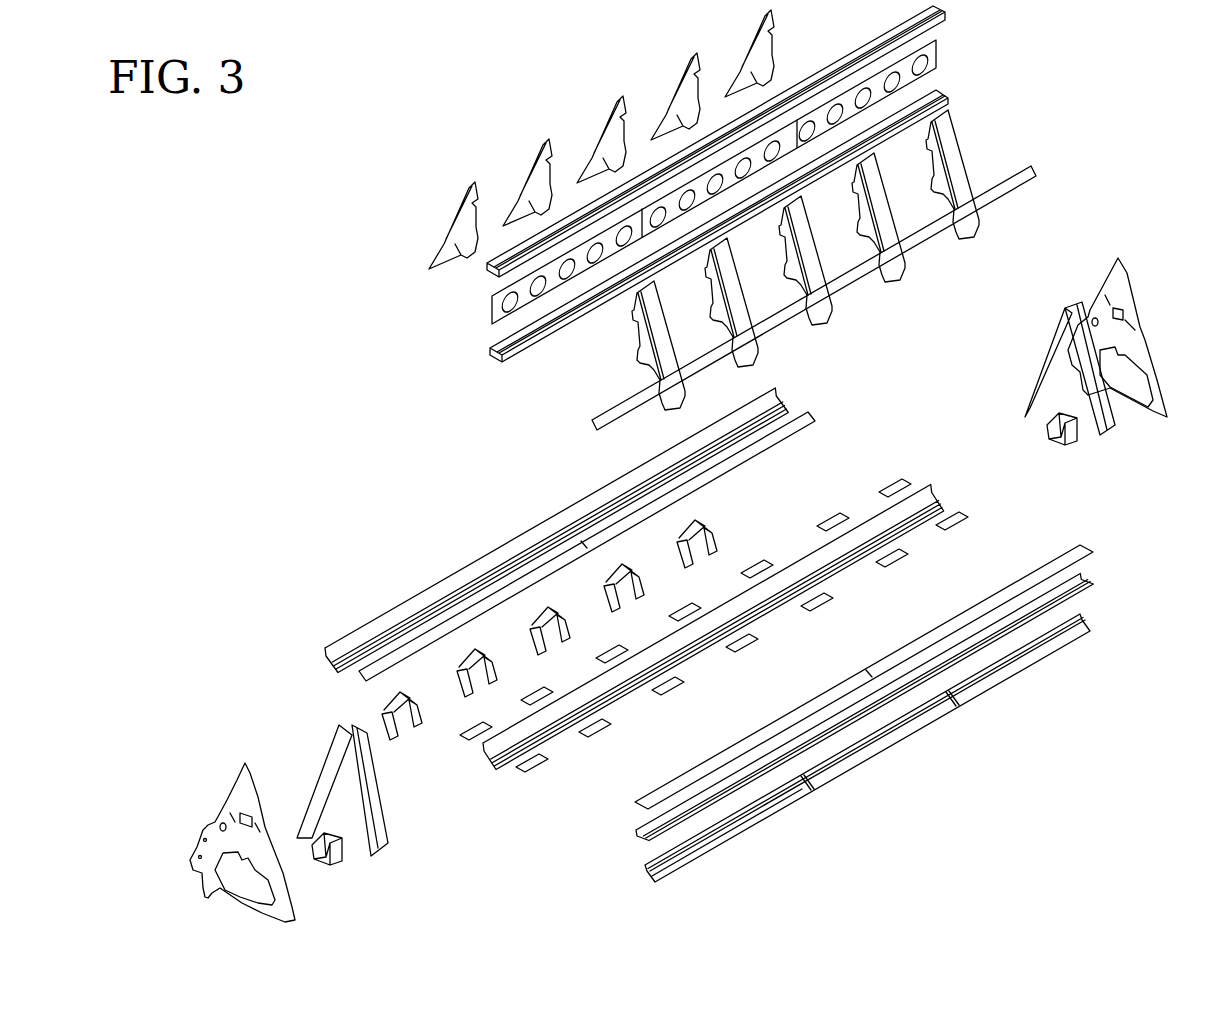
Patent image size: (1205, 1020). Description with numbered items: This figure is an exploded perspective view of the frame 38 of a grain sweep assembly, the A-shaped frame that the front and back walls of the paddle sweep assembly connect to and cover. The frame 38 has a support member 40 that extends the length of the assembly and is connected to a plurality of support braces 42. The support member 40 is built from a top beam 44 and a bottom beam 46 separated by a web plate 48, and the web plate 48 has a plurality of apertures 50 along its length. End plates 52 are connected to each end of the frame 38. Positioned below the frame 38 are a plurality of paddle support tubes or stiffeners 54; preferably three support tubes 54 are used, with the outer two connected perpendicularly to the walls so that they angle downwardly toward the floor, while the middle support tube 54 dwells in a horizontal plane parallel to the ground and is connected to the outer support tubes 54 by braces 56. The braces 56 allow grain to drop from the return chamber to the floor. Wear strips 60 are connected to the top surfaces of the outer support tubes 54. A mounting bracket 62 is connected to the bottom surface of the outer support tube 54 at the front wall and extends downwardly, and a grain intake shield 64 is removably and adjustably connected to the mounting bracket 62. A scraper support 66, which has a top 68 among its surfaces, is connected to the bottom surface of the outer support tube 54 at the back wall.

The frame 38 is at (1072, 106).
The support member 40 is at (948, 35).
The support braces 42 is at (962, 147).
The top beam 44 is at (862, 43).
The bottom beam 46 is at (942, 100).
The web plate 48 is at (937, 55).
The apertures 50 is at (898, 83).
The end plates 52 is at (1138, 318).
The paddle support tubes 54 is at (427, 588).
The braces 56 is at (762, 560).
The wear strips 60 is at (775, 323).
The mounting bracket 62 is at (650, 867).
The grain intake shield 64 is at (860, 760).
The scraper support 66 is at (562, 615).
The top 68 is at (315, 848).